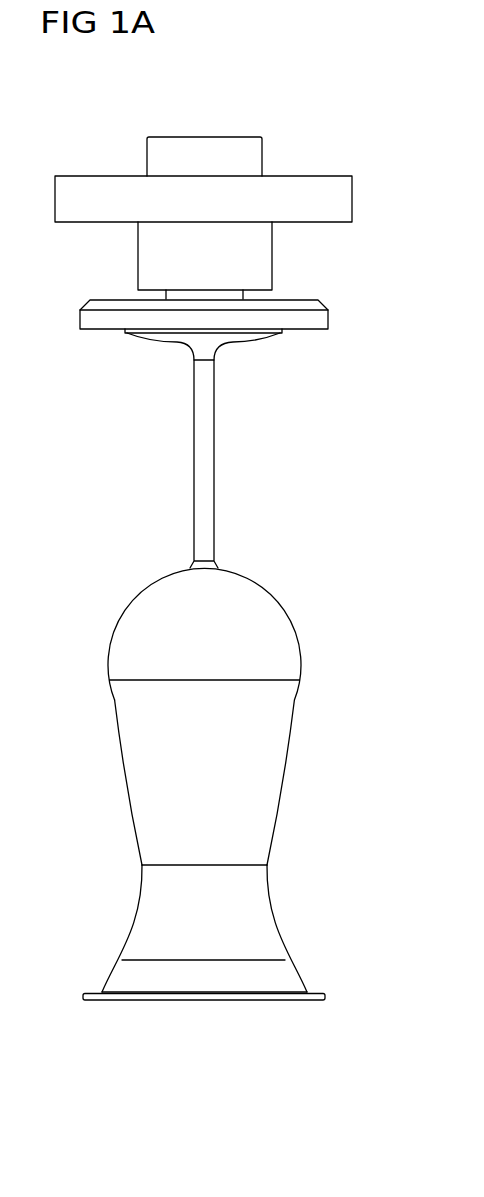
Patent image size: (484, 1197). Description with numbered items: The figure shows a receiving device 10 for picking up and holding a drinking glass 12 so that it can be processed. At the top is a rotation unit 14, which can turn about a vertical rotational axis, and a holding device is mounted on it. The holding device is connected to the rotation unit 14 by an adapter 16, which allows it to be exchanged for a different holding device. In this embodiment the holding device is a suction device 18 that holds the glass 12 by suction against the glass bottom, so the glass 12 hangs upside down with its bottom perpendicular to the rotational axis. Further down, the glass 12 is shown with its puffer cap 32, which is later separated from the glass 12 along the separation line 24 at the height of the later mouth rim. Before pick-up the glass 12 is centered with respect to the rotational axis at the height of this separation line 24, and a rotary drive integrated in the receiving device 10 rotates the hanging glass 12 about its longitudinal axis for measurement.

The receiving device 10 is at (323, 110).
The drinking glass 12 is at (272, 637).
The rotation unit 14 is at (339, 185).
The adapter 16 is at (260, 275).
The suction device 18 is at (320, 322).
The separation line 24 is at (270, 864).
The puffer cap 32 is at (257, 940).